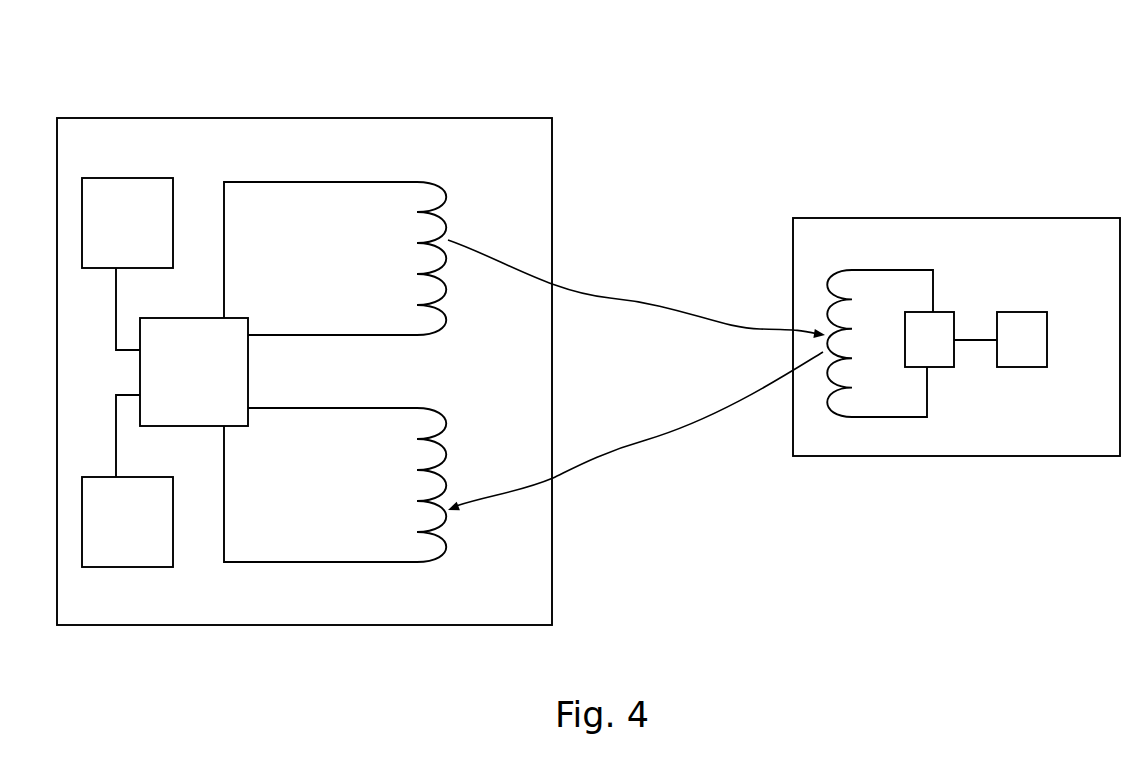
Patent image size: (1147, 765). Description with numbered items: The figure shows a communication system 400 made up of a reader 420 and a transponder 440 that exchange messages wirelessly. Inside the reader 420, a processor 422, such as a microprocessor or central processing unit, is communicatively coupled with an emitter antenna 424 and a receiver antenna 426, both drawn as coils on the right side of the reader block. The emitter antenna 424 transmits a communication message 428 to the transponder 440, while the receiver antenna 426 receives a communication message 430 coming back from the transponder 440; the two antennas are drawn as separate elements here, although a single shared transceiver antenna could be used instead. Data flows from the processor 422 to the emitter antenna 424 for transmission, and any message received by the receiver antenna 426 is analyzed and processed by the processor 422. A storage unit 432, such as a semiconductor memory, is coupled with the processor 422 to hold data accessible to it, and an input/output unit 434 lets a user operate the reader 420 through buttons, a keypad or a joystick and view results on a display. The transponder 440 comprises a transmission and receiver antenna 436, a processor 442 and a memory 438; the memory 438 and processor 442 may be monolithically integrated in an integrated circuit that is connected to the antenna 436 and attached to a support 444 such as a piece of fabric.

The communication system 400 is at (850, 48).
The reader 420 is at (305, 118).
The processor 422 is at (237, 317).
The emitter antenna 424 is at (443, 194).
The receiver antenna 426 is at (443, 423).
The communication message 428 is at (607, 296).
The communication message 430 is at (646, 440).
The storage unit 432 is at (127, 178).
The input/output unit 434 is at (127, 567).
The transmission and receiver antenna 436 is at (828, 316).
The memory 438 is at (1023, 312).
The transponder 440 is at (965, 218).
The processor 442 is at (943, 312).
The support 444 is at (988, 243).